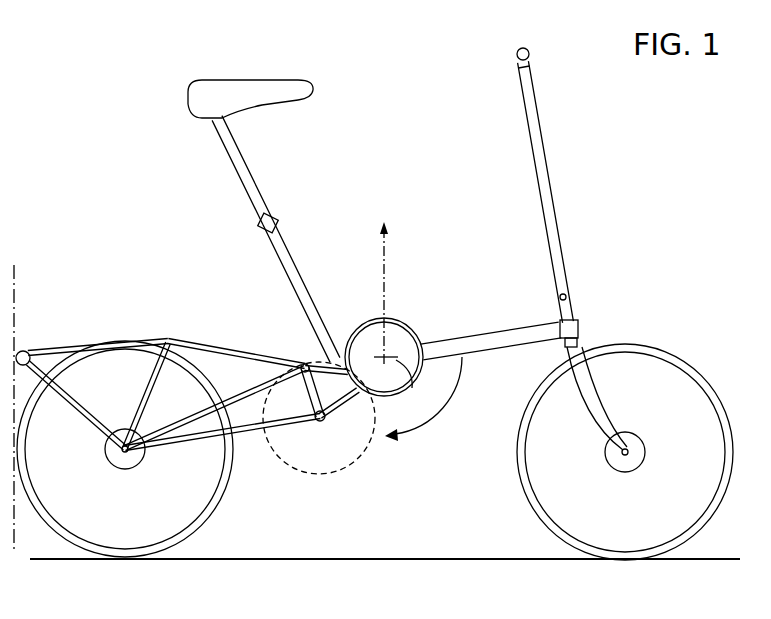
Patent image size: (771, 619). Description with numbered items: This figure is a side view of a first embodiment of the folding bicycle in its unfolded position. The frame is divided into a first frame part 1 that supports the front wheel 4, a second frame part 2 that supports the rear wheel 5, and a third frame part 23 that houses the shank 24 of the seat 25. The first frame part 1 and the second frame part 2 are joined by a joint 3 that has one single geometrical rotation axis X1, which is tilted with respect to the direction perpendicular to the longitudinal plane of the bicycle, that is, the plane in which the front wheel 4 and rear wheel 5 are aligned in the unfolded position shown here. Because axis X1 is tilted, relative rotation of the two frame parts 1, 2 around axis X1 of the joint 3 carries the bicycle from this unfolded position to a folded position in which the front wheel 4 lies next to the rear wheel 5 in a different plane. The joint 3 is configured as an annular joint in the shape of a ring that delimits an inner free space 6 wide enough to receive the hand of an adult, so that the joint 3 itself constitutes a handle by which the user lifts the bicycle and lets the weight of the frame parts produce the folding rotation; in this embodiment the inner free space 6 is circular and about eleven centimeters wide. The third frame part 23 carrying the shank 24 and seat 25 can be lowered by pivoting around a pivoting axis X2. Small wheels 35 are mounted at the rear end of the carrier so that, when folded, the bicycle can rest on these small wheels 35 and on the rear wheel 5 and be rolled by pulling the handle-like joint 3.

The first frame part 1 is at (478, 333).
The second frame part 2 is at (288, 423).
The joint 3 is at (400, 312).
The front wheel 4 is at (693, 538).
The rear wheel 5 is at (192, 537).
The inner free space 6 is at (373, 375).
The third frame part 23 is at (285, 243).
The shank 24 is at (230, 157).
The seat 25 is at (212, 80).
The small wheels 35 is at (20, 348).
The rotation axis X1 is at (417, 390).
The pivoting axis X2 is at (304, 362).